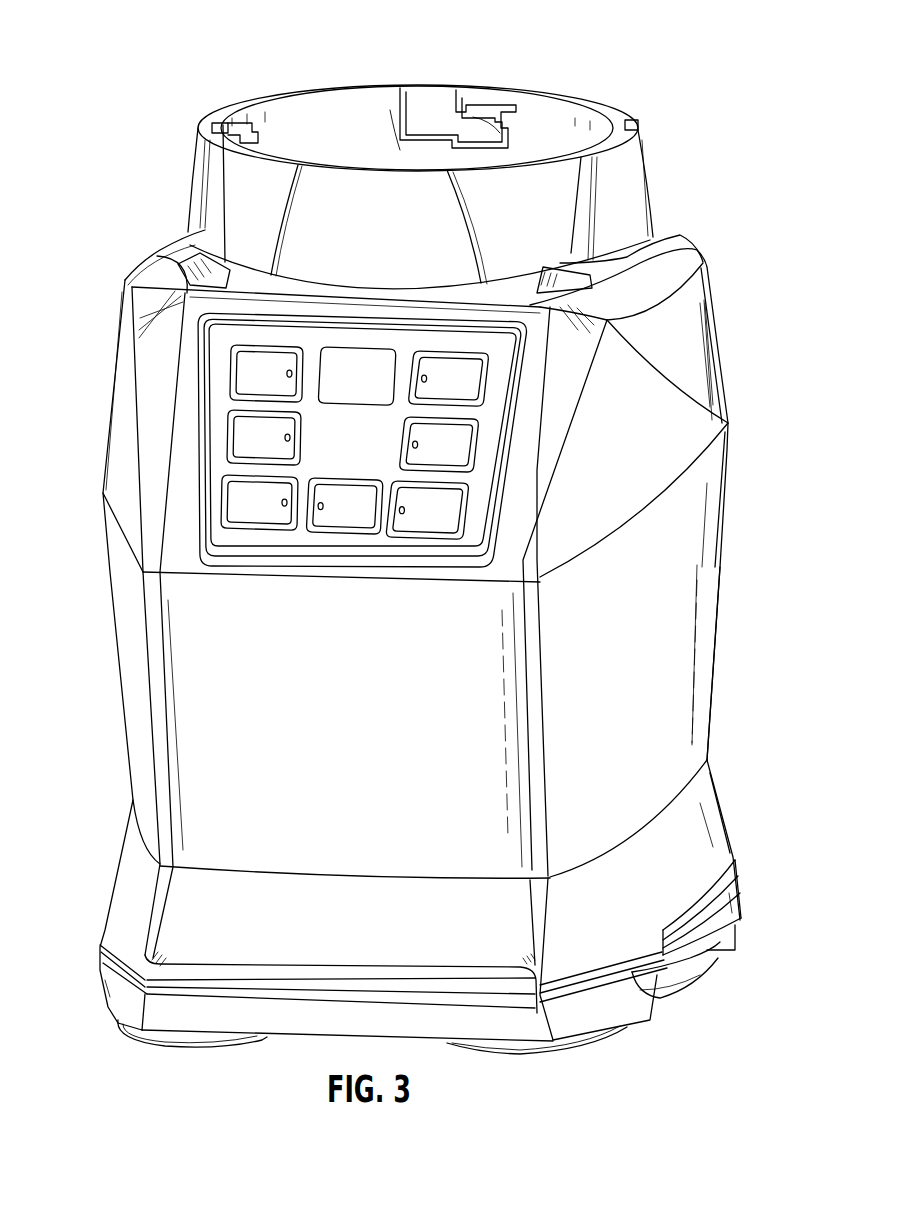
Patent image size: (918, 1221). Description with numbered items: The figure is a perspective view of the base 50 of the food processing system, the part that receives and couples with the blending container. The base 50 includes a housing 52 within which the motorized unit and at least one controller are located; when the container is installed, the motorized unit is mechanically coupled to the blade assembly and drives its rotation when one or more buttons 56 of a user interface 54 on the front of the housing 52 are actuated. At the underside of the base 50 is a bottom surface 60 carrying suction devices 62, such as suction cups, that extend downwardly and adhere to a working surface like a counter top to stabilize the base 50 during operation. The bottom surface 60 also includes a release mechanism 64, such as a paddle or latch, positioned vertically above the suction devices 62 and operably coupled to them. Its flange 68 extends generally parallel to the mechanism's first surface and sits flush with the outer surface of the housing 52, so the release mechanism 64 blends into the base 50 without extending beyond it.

The base 50 is at (750, 112).
The housing 52 is at (672, 653).
The user interface 54 is at (217, 397).
The buttons 56 is at (418, 444).
The bottom surface 60 is at (630, 973).
The suction devices 62 is at (707, 960).
The release mechanism 64 is at (757, 924).
The flange 68 is at (742, 892).